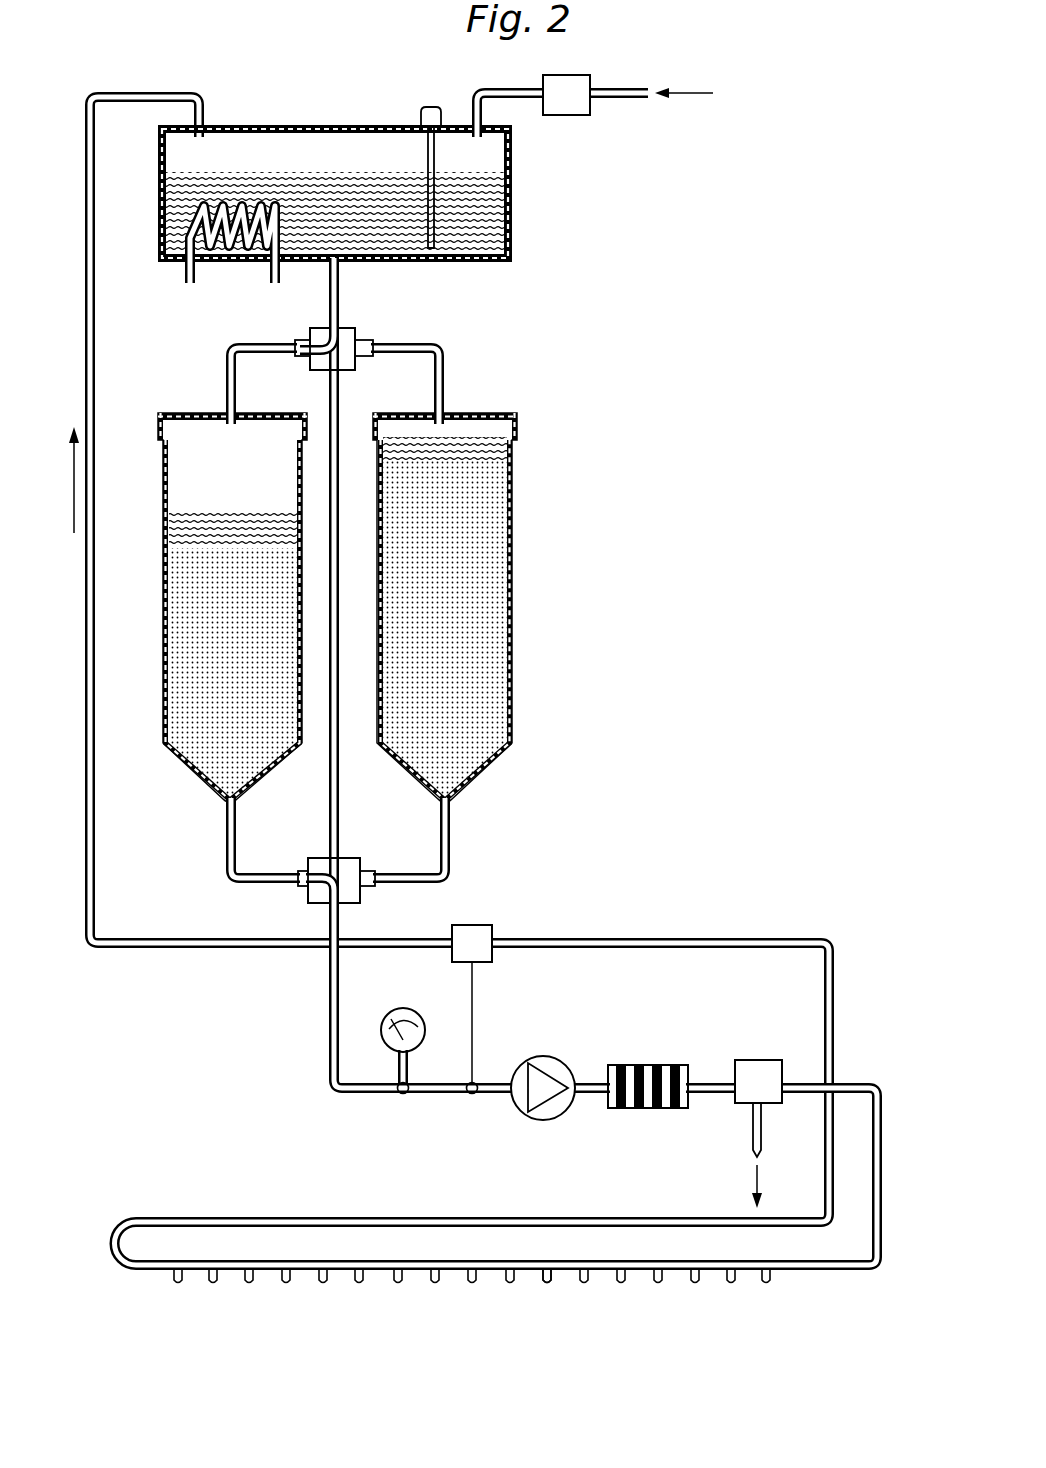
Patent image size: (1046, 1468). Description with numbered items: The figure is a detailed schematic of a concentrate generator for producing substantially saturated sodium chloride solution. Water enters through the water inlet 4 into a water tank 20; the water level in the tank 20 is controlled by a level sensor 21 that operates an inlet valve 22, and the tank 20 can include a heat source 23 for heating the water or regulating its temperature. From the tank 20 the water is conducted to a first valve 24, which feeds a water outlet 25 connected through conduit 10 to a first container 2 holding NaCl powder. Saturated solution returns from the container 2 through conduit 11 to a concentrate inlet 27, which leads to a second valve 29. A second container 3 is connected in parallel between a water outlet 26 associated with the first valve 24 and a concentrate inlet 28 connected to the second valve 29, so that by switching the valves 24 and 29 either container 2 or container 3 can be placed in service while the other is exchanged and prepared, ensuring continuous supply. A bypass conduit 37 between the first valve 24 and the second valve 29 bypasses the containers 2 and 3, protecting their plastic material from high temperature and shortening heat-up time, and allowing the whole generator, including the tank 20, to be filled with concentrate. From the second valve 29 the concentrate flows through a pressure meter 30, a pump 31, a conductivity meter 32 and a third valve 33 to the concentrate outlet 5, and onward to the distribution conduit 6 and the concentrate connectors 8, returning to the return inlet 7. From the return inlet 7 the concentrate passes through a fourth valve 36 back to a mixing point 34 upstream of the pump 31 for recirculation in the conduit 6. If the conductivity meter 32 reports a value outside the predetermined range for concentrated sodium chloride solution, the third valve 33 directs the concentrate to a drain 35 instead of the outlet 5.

The first salt container 2 is at (162, 471).
The second salt container 3 is at (512, 471).
The water inlet 4 is at (624, 92).
The concentrate outlet 5 is at (883, 1179).
The distribution conduit 6 is at (461, 1284).
The return inlet 7 is at (495, 1220).
The concentrate connectors 8 is at (547, 1285).
The conduit 10 is at (226, 376).
The conduit 11 is at (227, 846).
The water tank 20 is at (511, 206).
The level sensor 21 is at (440, 152).
The inlet valve 22 is at (578, 107).
The heat source 23 is at (180, 226).
The first valve 24 is at (335, 347).
The water outlet 25 is at (300, 339).
The water outlet 26 is at (368, 358).
The concentrate inlet 27 is at (301, 870).
The concentrate inlet 28 is at (368, 870).
The second valve 29 is at (335, 882).
The pressure meter 30 is at (400, 1010).
The pump 31 is at (556, 1052).
The conductivity meter 32 is at (648, 1063).
The third valve 33 is at (750, 1060).
The mixing point 34 is at (473, 1100).
The drain 35 is at (753, 1133).
The fourth valve 36 is at (480, 928).
The bypass conduit 37 is at (330, 379).